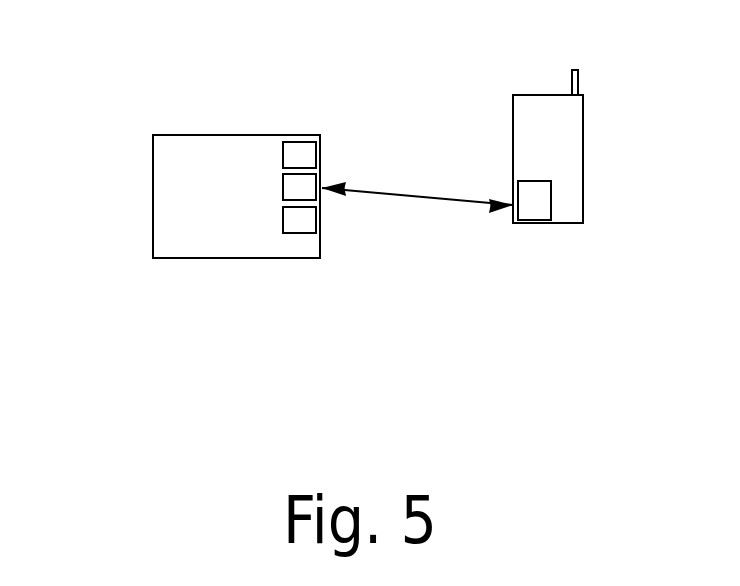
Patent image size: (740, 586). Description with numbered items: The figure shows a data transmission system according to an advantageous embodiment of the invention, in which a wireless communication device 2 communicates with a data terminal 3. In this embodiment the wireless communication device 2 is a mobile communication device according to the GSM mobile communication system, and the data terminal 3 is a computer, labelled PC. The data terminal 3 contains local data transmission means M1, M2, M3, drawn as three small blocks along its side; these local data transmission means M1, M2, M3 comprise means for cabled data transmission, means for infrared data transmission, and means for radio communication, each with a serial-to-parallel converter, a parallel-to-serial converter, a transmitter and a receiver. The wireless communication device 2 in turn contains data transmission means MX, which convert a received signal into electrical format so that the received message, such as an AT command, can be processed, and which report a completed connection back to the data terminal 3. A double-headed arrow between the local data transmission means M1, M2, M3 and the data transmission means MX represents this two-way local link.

The data terminal 3 is at (153, 158).
The wireless communication device 2 is at (583, 173).
The local data transmission means M1 is at (295, 135).
The local data transmission means M2 is at (320, 175).
The local data transmission means M3 is at (288, 225).
The data transmission means of the wireless communication device MX is at (530, 212).